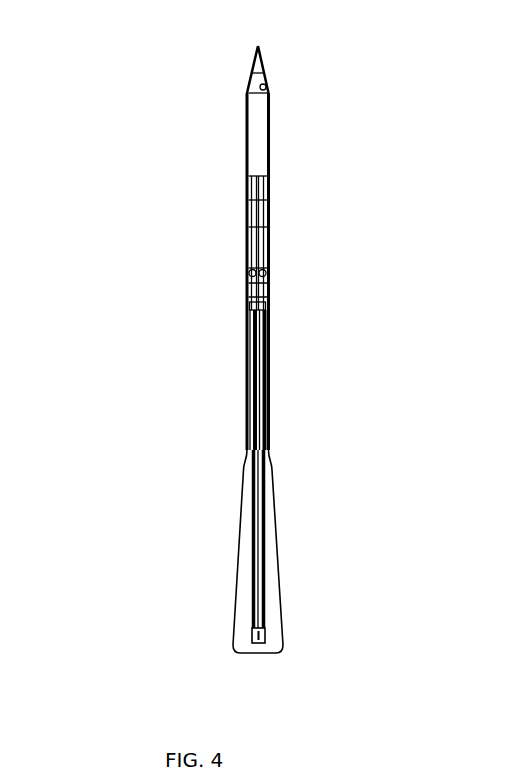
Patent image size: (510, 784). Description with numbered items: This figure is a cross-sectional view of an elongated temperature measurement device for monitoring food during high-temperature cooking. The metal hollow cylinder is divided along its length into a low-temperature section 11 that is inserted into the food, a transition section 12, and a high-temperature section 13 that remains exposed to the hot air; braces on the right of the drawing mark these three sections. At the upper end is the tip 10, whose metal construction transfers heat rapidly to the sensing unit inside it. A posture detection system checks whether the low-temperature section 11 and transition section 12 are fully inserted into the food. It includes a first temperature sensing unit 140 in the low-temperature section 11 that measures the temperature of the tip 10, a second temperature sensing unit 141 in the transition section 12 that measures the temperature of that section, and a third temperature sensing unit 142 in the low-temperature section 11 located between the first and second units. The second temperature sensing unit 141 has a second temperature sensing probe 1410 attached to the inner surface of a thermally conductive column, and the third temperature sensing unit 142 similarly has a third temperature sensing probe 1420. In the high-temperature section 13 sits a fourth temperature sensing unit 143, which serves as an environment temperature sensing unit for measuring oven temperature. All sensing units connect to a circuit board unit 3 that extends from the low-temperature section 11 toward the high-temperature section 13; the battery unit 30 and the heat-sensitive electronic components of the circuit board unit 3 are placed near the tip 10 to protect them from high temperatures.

The tip 10 is at (247, 68).
The first temperature sensing unit 140 is at (247, 93).
The battery unit 30 is at (247, 146).
The third temperature sensing probe 1420 is at (247, 200).
The third temperature sensing unit 142 is at (247, 215).
The second temperature sensing unit 141 is at (243, 285).
The second temperature sensing probe 1410 is at (247, 290).
The circuit board unit 3 is at (245, 382).
The fourth temperature sensing unit 143 is at (249, 634).
The low-temperature section 11 is at (300, 48).
The transition section 12 is at (300, 240).
The high-temperature section 13 is at (300, 440).